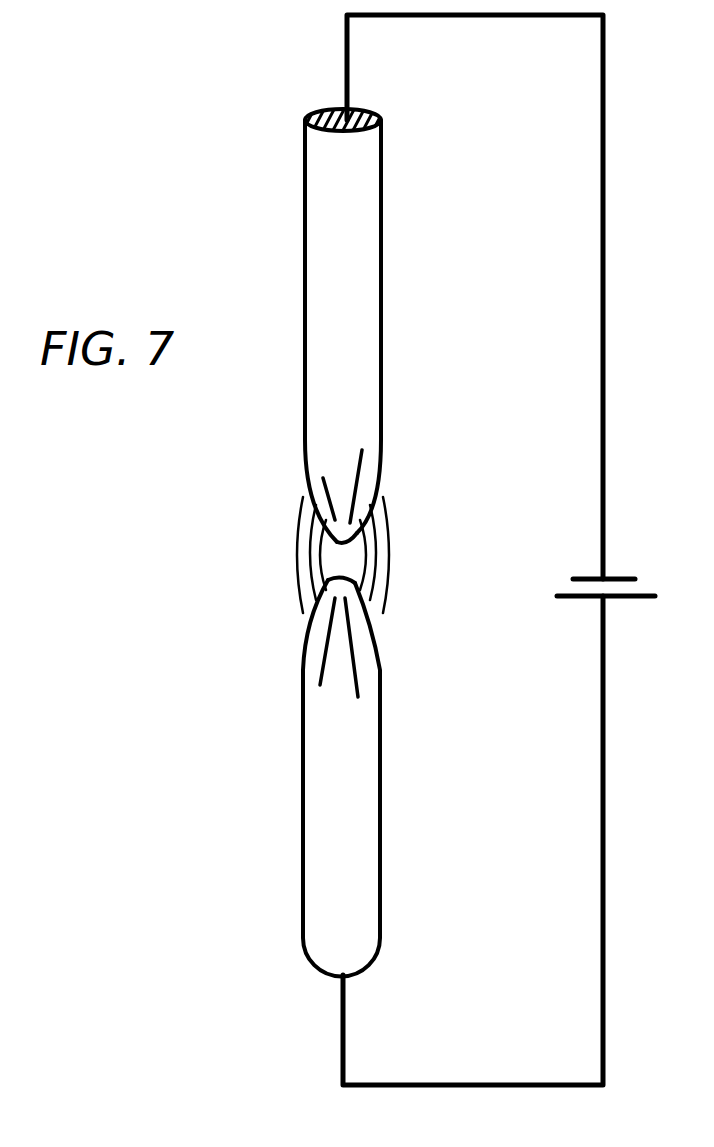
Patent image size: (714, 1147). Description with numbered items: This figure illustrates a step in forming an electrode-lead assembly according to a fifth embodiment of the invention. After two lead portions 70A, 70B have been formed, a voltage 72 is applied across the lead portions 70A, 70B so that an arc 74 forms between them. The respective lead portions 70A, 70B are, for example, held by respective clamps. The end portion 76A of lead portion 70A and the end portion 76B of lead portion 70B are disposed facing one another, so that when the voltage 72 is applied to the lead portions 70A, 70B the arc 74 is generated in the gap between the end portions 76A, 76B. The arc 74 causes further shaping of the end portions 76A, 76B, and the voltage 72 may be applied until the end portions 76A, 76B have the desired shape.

The lead portion 70A is at (383, 220).
The lead portion 70B is at (380, 810).
The voltage 72 is at (615, 578).
The arc 74 is at (392, 562).
The end portion 76A is at (380, 488).
The end portion 76B is at (373, 638).